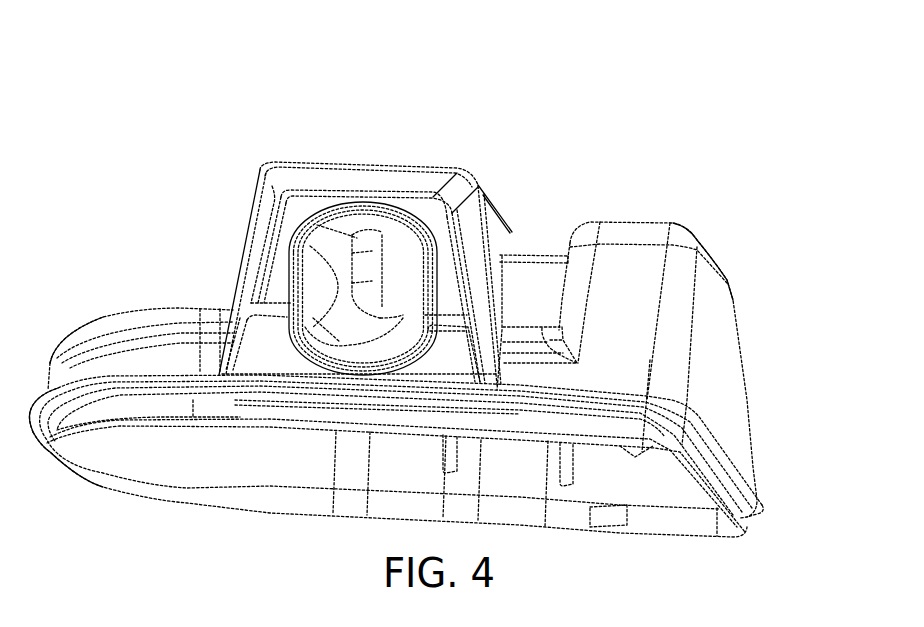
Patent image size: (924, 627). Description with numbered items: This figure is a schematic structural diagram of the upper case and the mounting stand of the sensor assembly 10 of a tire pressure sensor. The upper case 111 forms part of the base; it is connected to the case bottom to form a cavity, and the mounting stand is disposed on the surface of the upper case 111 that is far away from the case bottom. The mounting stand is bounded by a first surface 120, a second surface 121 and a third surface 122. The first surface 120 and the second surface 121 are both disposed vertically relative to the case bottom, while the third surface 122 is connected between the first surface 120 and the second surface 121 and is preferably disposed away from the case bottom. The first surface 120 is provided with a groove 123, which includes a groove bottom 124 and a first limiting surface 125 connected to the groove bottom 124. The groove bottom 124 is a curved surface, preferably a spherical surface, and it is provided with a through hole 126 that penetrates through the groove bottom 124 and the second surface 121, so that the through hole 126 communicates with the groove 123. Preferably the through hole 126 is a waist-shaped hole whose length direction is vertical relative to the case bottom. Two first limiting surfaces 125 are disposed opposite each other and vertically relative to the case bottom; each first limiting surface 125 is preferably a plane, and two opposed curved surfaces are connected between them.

The sensor assembly 10 is at (697, 86).
The upper case 111 is at (660, 308).
The first surface 120 is at (385, 195).
The second surface 121 is at (512, 236).
The third surface 122 is at (348, 162).
The groove 123 is at (121, 232).
The groove bottom 124 is at (343, 257).
The first limiting surface 125 is at (317, 287).
The through hole 126 is at (384, 262).